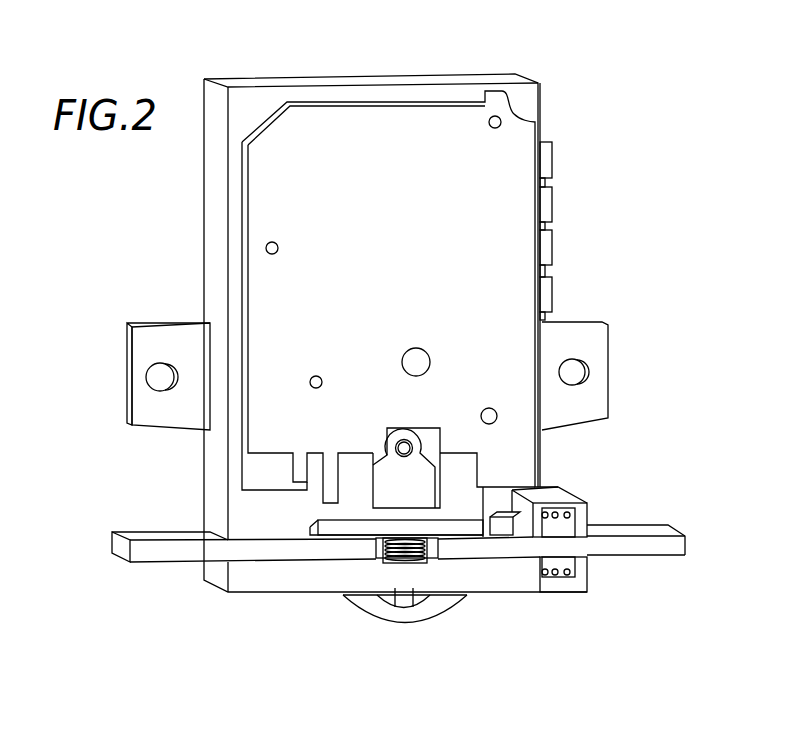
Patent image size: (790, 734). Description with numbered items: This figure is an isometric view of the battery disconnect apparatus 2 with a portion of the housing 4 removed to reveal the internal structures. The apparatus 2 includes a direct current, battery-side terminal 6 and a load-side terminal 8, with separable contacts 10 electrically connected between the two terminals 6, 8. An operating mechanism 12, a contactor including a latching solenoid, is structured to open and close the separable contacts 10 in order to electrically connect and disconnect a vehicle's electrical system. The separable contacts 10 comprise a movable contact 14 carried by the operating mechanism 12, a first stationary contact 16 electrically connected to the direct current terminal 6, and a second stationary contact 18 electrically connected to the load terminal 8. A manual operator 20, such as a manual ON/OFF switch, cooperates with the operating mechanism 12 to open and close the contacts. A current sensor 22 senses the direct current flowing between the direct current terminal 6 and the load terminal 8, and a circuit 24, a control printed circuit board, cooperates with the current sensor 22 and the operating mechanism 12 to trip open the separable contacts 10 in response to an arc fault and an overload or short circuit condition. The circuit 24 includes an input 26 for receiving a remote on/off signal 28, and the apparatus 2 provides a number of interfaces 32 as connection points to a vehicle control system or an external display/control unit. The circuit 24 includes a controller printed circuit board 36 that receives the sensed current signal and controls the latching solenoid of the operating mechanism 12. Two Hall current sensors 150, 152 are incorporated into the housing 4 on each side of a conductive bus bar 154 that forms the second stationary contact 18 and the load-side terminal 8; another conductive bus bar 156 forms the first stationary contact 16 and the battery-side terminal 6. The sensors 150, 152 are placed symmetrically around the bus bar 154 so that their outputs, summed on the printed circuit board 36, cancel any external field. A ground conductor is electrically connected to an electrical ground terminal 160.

The battery disconnect apparatus 2 is at (234, 65).
The housing 4 is at (418, 84).
The direct current terminal 6 is at (133, 530).
The load terminal 8 is at (660, 523).
The separable contacts 10 is at (322, 568).
The operating mechanism 12 is at (393, 480).
The movable contact 14 is at (357, 528).
The first stationary contact 16 is at (328, 548).
The second stationary contact 18 is at (462, 550).
The manual operator 20 is at (418, 623).
The current sensor 22 is at (594, 566).
The circuit 24 is at (262, 190).
The input 26 is at (549, 252).
The remote on/off signal 28 is at (562, 240).
The interfaces 32 is at (552, 190).
The controller printed circuit board 36 is at (482, 230).
The Hall current sensor 150 is at (577, 511).
The Hall current sensor 152 is at (555, 584).
The conductive bus bar 154 is at (652, 547).
The conductive bus bar 156 is at (165, 550).
The electrical ground terminal 160 is at (550, 293).